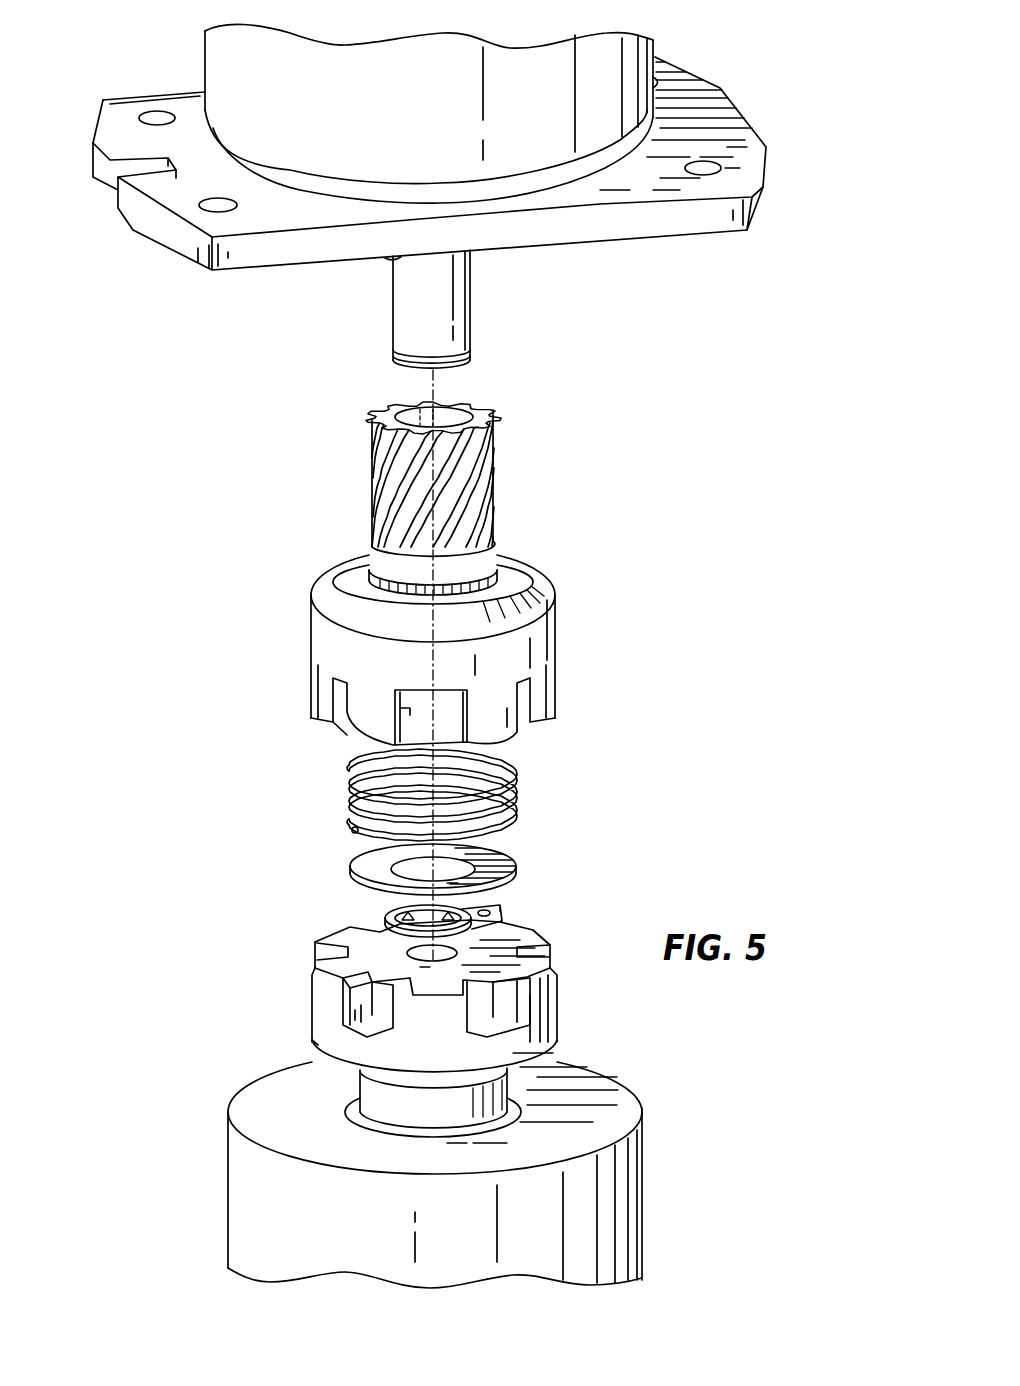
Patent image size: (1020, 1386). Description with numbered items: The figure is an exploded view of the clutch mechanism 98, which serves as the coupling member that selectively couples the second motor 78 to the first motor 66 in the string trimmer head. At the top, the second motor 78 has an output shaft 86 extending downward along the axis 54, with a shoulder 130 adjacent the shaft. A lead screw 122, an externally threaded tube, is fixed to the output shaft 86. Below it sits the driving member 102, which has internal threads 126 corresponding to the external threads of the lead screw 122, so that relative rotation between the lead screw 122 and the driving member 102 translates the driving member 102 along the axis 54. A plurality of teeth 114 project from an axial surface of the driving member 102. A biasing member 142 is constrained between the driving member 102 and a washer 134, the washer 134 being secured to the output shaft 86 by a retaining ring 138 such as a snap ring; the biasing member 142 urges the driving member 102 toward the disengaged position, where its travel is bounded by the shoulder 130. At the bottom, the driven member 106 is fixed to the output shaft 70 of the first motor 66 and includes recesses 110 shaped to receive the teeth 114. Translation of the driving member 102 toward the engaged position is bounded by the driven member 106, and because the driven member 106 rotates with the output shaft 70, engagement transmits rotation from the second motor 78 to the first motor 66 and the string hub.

The second motor 78 is at (220, 67).
The shoulder 130 is at (395, 257).
The output shaft 86 is at (460, 320).
The axis 54 is at (437, 393).
The lead screw 122 is at (495, 488).
The internal threads 126 is at (492, 562).
The driving member 102 is at (555, 636).
The teeth 114 is at (352, 728).
The clutch mechanism 98 is at (203, 607).
The biasing member 142 is at (515, 782).
The washer 134 is at (513, 853).
The retaining ring 138 is at (497, 913).
The driven member 106 is at (552, 1028).
The recesses 110 is at (310, 1040).
The output shaft 70 is at (420, 1088).
The first motor 66 is at (250, 1190).